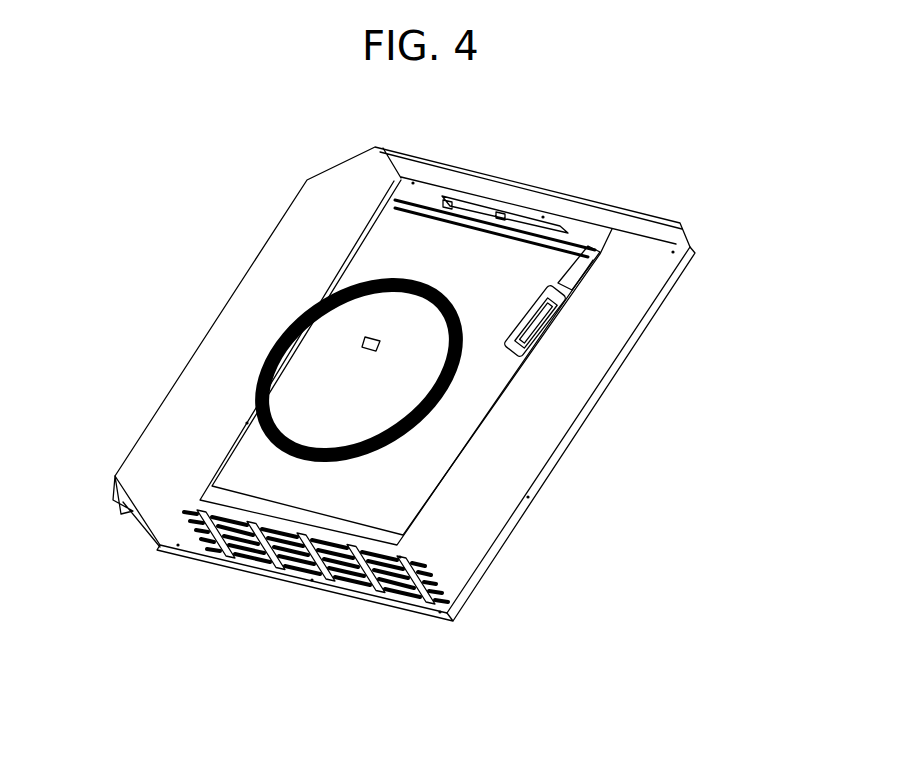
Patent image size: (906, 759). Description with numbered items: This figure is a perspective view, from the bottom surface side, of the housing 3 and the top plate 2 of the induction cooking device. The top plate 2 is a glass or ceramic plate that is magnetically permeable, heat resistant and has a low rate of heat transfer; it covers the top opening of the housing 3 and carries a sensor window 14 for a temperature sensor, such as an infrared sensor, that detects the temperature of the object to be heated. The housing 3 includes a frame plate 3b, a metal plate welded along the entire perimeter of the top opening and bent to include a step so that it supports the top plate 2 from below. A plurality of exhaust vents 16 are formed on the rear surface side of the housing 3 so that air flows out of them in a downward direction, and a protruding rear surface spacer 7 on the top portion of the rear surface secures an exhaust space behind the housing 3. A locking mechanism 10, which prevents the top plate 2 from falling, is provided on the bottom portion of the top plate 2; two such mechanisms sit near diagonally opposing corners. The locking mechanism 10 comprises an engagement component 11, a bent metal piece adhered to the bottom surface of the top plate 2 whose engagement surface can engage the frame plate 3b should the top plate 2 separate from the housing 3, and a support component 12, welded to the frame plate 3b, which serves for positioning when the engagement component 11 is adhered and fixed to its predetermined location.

The top plate 2 is at (430, 250).
The housing 3 is at (207, 362).
The frame plate 3b is at (487, 413).
The rear surface spacer 7 is at (113, 503).
The locking mechanism 10 is at (512, 314).
The engagement component 11 is at (546, 327).
The support component 12 is at (587, 278).
The sensor window 14 is at (368, 337).
The exhaust vent 16 is at (297, 557).